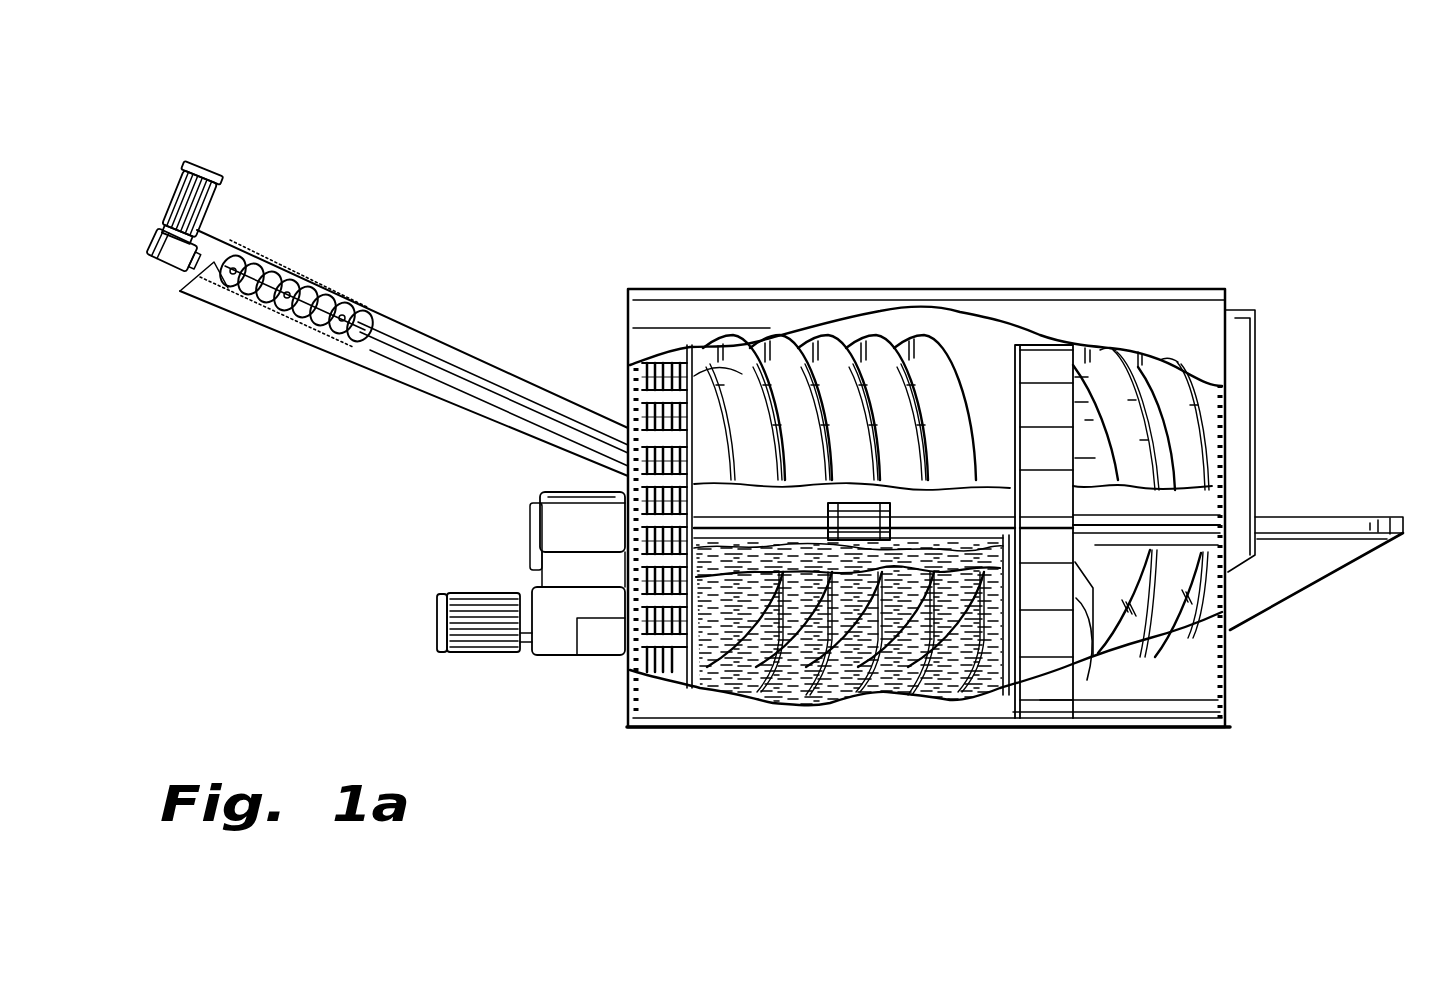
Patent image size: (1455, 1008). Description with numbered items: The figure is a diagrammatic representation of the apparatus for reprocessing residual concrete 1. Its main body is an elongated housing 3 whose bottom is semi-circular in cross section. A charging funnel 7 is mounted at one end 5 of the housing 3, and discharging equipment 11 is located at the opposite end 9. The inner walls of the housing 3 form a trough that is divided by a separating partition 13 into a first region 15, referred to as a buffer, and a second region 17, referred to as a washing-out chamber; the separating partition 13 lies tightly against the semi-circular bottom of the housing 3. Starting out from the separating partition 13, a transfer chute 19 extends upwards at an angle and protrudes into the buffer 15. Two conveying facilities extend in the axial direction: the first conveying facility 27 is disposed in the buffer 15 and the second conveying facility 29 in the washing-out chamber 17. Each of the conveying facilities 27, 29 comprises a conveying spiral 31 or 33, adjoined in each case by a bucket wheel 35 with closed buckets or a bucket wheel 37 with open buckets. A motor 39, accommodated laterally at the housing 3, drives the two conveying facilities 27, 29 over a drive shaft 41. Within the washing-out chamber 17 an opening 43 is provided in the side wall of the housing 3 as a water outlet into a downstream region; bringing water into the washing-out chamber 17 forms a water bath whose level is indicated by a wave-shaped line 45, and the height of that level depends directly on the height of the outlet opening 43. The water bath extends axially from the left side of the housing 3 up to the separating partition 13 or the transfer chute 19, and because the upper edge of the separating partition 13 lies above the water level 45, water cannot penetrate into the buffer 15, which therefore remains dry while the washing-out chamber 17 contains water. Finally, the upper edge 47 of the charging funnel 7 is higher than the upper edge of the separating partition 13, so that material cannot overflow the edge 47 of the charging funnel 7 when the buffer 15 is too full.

The apparatus for reprocessing residual concrete 1 is at (1152, 130).
The elongated housing 3 is at (836, 275).
The end of the housing 5 is at (1278, 368).
The charging funnel 7 is at (1386, 490).
The opposite end of the housing 9 is at (605, 395).
The discharging equipment 11 is at (264, 325).
The separating partition 13 is at (1000, 673).
The first region (buffer) 15 is at (1196, 733).
The second region (washing-out chamber) 17 is at (886, 682).
The transfer chute 19 is at (1092, 590).
The first conveying facility 27 is at (1116, 657).
The second conveying facility 29 is at (762, 742).
The conveying spiral 31 is at (1152, 345).
The conveying spiral 33 is at (912, 340).
The bucket wheel with closed buckets 35 is at (1045, 370).
The bucket wheel with open buckets 37 is at (660, 365).
The motor 39 is at (488, 640).
The drive shaft 41 is at (1182, 525).
The opening (water outlet) 43 is at (863, 510).
The wave-shaped line (water level) 45 is at (722, 525).
The upper edge of the charging funnel 47 is at (1317, 520).